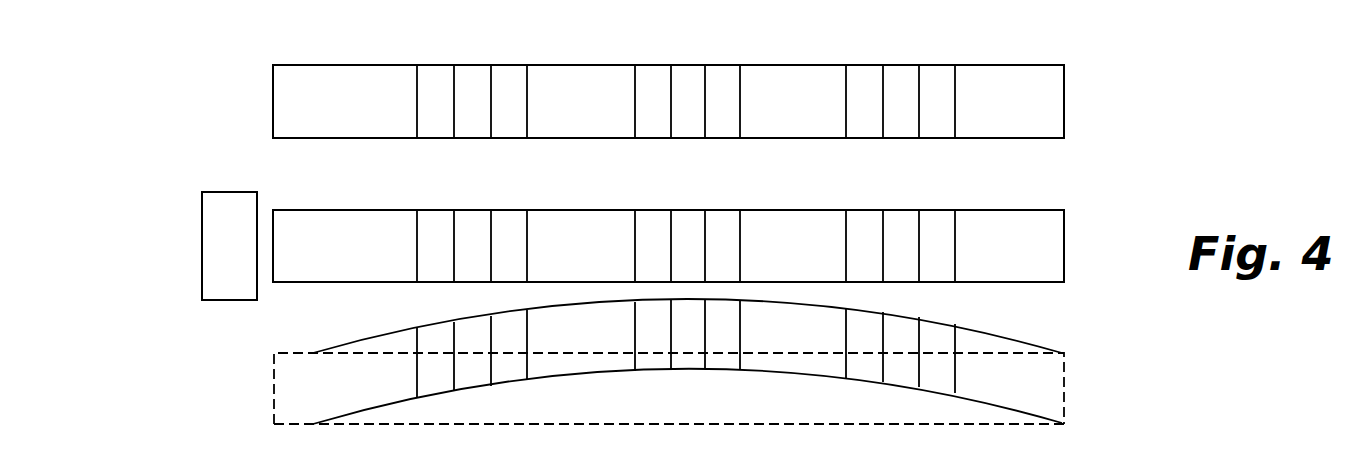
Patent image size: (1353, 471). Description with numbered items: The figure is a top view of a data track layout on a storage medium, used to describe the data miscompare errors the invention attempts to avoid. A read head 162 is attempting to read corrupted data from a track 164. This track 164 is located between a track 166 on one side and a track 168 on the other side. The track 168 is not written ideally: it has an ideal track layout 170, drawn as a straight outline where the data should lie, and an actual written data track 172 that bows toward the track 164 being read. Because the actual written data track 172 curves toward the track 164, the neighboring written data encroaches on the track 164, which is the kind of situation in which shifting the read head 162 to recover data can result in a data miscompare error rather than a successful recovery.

The read head 162 is at (218, 300).
The track 164 is at (1064, 250).
The track 166 is at (1064, 107).
The track 168 is at (1065, 389).
The ideal track layout 170 is at (720, 425).
The actual written data track 172 is at (1003, 334).